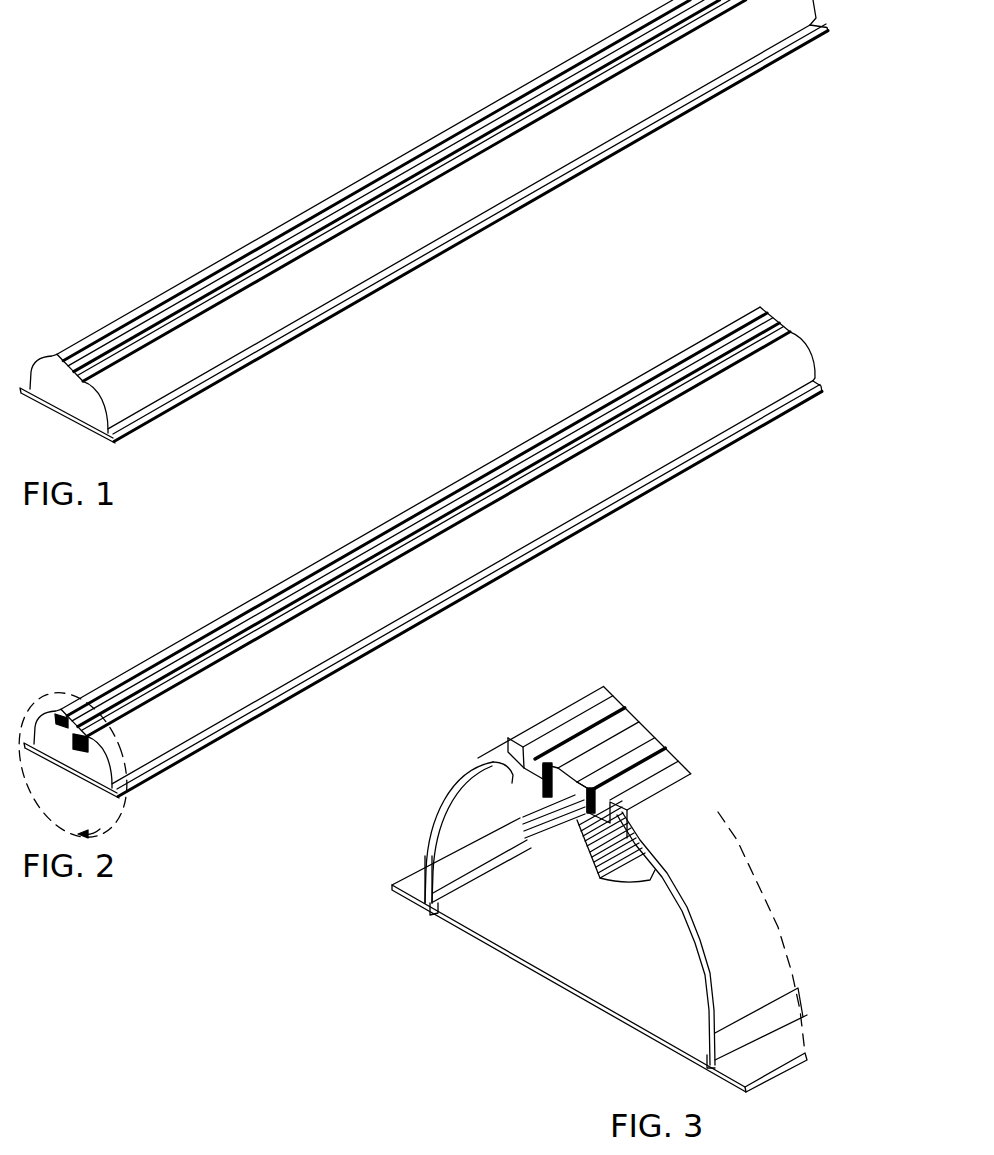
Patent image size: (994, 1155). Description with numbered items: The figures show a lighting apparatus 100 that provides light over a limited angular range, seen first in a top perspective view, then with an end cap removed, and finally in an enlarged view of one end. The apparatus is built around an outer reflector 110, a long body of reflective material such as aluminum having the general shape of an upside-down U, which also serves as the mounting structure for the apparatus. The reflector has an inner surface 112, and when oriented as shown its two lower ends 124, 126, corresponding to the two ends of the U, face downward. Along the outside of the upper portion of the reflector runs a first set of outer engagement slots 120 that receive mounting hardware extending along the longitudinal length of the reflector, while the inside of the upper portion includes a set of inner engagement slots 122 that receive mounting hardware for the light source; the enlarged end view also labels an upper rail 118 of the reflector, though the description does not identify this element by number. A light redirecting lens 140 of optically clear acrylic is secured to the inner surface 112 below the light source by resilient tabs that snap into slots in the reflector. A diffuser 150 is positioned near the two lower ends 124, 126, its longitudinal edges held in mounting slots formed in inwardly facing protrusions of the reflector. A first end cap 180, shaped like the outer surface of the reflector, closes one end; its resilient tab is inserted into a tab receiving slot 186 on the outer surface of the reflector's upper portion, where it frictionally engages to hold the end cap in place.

In FIG. 1, the lighting apparatus 100 is at (268, 206).
In FIG. 2, the lighting apparatus 100 is at (269, 563).
In FIG. 3, the lighting apparatus 100 is at (476, 728).
In FIG. 1, the outer reflector 110 is at (423, 216).
In FIG. 2, the outer reflector 110 is at (243, 698).
In FIG. 3, the outer reflector 110 is at (743, 855).
In FIG. 3, the inner surface 112 is at (430, 838).
In FIG. 3, the rail 118 is at (578, 712).
In FIG. 3, the outer engagement slots 120 is at (607, 692).
In FIG. 3, the inner engagement slots 122 is at (490, 770).
In FIG. 3, the lower end 124 is at (425, 912).
In FIG. 3, the lower end 126 is at (710, 1070).
In FIG. 2, the light redirecting lens 140 is at (56, 757).
In FIG. 3, the light redirecting lens 140 is at (700, 912).
In FIG. 2, the diffuser 150 is at (98, 789).
In FIG. 3, the diffuser 150 is at (480, 917).
In FIG. 1, the first end cap 180 is at (62, 411).
In FIG. 3, the tab receiving slot 186 is at (610, 752).